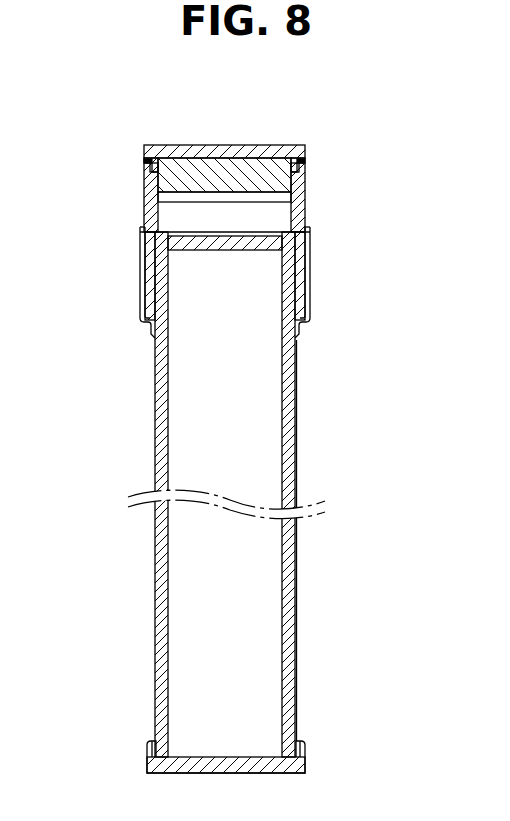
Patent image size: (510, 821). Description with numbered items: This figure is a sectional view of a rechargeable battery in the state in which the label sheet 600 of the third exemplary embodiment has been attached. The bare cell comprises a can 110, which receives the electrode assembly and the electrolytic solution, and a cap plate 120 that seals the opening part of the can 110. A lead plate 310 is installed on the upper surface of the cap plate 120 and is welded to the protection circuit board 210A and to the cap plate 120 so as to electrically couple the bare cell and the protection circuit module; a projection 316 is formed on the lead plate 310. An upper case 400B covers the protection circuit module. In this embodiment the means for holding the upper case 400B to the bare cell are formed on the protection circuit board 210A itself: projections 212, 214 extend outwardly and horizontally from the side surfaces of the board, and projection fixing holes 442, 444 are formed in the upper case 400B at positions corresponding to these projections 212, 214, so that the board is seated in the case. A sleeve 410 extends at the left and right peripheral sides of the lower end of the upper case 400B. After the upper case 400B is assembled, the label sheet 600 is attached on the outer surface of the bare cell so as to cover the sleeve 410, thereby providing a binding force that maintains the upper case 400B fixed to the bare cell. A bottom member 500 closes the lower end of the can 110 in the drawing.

The upper case 400B is at (190, 152).
The protection circuit board 210A is at (247, 170).
The projection fixing hole 444 is at (145, 161).
The projection fixing hole 442 is at (305, 162).
The projection 214 is at (148, 175).
The projection 212 is at (300, 173).
The lead plate 310 is at (168, 218).
The projection 316 is at (296, 237).
The cap plate 120 is at (297, 248).
The sleeve 410 is at (153, 290).
The can 110 is at (287, 380).
The label sheet 600 is at (297, 445).
The bottom cap 500 is at (303, 763).